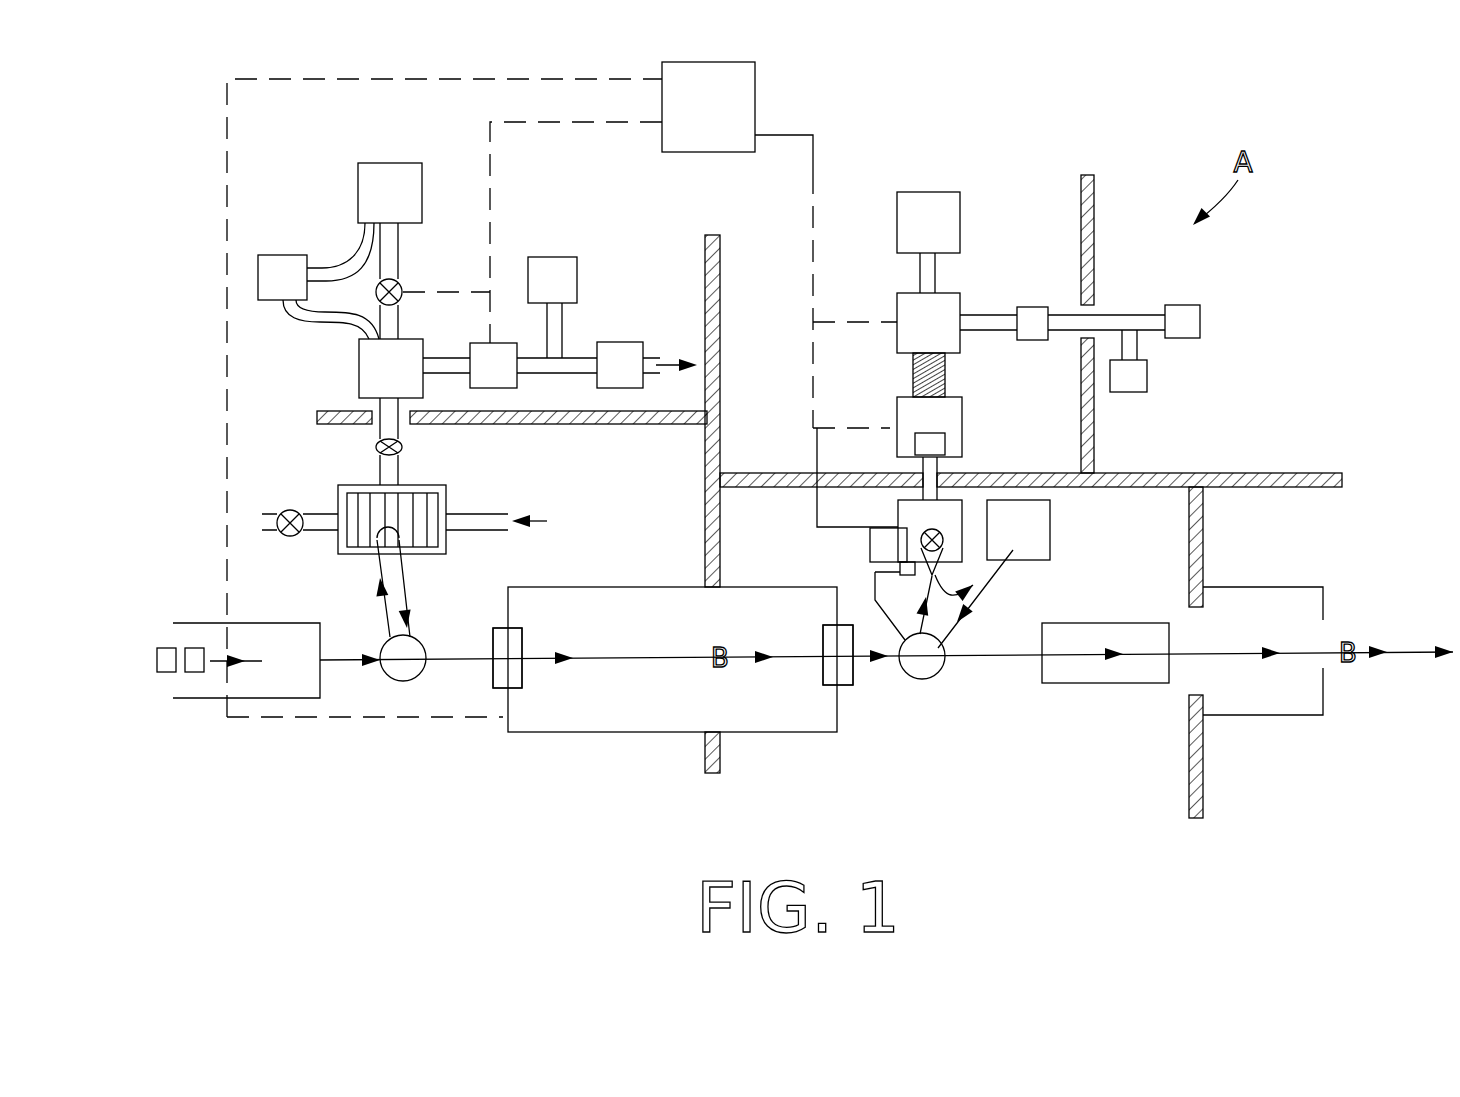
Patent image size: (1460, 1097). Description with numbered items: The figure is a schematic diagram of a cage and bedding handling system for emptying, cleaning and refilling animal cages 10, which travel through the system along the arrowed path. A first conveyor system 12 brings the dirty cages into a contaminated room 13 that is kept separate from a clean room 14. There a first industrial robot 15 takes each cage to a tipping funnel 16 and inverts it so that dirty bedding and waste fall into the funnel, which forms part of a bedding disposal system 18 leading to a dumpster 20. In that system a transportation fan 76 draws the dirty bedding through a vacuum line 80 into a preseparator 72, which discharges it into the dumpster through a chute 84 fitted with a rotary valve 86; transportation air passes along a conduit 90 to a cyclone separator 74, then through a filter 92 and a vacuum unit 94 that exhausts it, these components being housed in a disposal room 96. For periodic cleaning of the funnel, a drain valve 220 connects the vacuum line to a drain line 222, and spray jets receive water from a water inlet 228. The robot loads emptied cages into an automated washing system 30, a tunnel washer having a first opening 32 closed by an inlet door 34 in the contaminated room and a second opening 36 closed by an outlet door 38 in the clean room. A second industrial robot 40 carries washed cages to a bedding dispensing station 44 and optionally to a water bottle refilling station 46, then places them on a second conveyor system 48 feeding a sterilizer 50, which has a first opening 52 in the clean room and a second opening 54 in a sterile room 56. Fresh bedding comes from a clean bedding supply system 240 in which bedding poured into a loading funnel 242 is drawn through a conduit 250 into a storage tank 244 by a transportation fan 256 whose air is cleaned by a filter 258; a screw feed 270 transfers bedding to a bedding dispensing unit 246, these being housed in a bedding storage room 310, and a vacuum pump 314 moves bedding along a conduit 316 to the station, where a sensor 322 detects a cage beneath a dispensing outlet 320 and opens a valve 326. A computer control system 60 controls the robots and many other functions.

The animal cages 10 is at (196, 673).
The first conveyor system 12 is at (278, 690).
The contaminated room 13 is at (627, 468).
The clean room 14 is at (745, 530).
The first industrial robot 15 is at (405, 678).
The tipping funnel 16 is at (430, 480).
The bedding disposal system 18 is at (330, 388).
The dumpster 20 is at (374, 207).
The automated washing system 30 is at (613, 713).
The first opening 32 is at (523, 658).
The inlet closure or door 34 is at (515, 683).
The second opening 36 is at (840, 668).
The outlet closure or door 38 is at (843, 683).
The second industrial robot 40 is at (922, 680).
The bedding dispensing station 44 is at (907, 515).
The water bottle refilling station 46 is at (1003, 543).
The second conveyor system 48 is at (1070, 672).
The sterilizer 50 is at (1245, 700).
The first opening 52 is at (1188, 612).
The second opening 54 is at (1328, 658).
The sterile room 56 is at (1217, 523).
The computer control system 60 is at (693, 124).
The preseparator 72 is at (376, 383).
The cyclone separator 74 is at (508, 380).
The transportation fan 76 is at (275, 302).
The vacuum line 80 is at (385, 465).
The chute 84 is at (392, 245).
The rotary valve 86 is at (397, 295).
The conduit 90 is at (438, 365).
The filter 92 is at (608, 383).
The vacuum unit 94 is at (577, 280).
The disposal room 96 is at (672, 400).
The drain valve 220 is at (295, 510).
The drain line 222 is at (318, 533).
The water inlet 228 is at (552, 521).
The clean bedding supply system 240 is at (846, 367).
The loading funnel 242 is at (907, 235).
The storage tank 244 is at (907, 336).
The bedding dispensing unit 246 is at (907, 437).
The conduit 250 is at (922, 270).
The transportation fan 256 is at (1137, 390).
The filter 258 is at (1030, 332).
The screw feed 270 is at (945, 380).
The bedding storage room 310 is at (1028, 443).
The vacuum pump 314 is at (945, 455).
The conduit 316 is at (923, 465).
The dispensing outlet 320 is at (965, 610).
The sensor 322 is at (900, 570).
The valve 326 is at (925, 540).